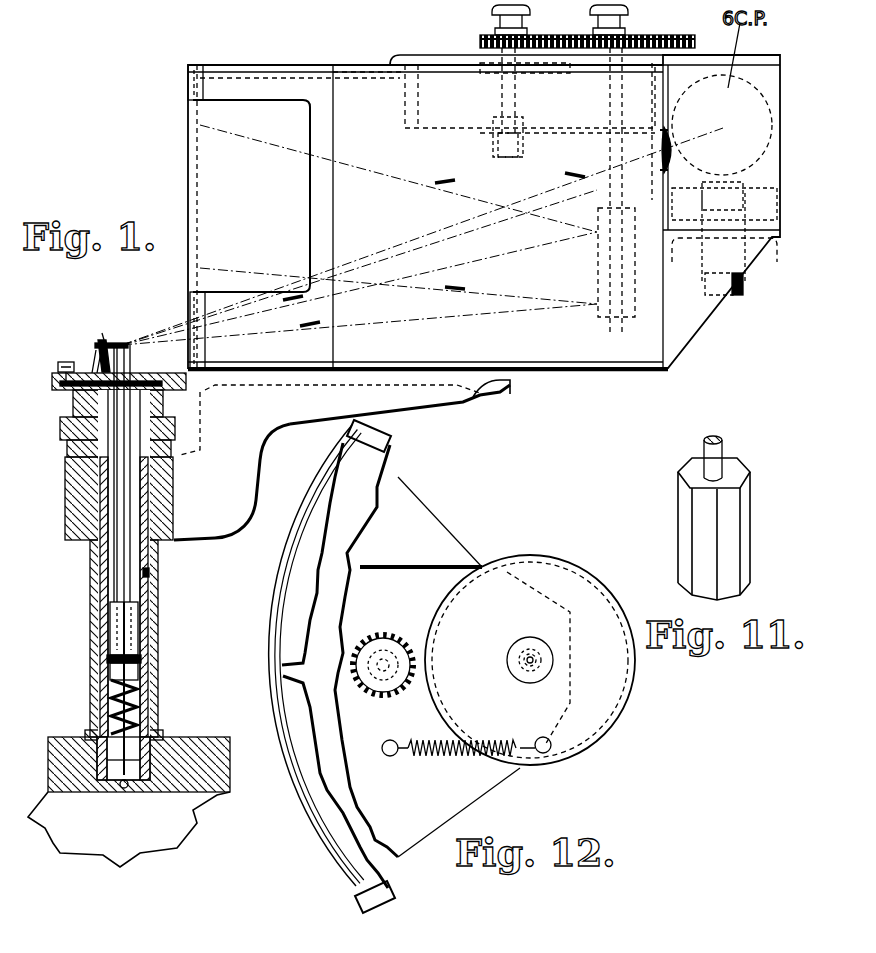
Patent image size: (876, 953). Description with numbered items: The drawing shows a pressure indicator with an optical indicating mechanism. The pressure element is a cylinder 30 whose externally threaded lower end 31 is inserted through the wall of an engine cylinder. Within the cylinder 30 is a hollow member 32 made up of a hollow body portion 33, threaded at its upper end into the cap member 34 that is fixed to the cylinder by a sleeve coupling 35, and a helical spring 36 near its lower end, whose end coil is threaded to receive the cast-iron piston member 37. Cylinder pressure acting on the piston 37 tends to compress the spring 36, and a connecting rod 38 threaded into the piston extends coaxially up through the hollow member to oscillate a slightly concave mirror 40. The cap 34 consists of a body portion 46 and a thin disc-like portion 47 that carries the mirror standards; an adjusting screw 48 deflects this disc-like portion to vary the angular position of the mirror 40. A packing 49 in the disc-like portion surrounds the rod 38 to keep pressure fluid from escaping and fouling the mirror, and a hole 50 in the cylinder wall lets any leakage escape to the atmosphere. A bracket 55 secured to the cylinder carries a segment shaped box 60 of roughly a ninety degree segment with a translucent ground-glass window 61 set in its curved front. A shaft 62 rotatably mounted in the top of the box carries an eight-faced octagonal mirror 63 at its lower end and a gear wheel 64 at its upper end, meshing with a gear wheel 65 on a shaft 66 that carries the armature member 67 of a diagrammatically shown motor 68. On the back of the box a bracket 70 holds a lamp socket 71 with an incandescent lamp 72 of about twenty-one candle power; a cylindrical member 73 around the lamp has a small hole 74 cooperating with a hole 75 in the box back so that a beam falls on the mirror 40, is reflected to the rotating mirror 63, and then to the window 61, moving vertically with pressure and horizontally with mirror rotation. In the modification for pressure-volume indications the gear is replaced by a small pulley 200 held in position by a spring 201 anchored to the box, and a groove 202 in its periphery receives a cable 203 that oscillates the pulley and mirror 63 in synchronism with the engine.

In FIG. 1, the segment shaped box 60 is at (570, 353).
In FIG. 1, the translucent window 61 is at (210, 192).
In FIG. 1, the shaft 62 is at (620, 327).
In FIG. 12, the shaft 62 is at (533, 667).
In FIG. 11, the shaft 62 is at (717, 463).
In FIG. 1, the rotatable mirror 63 is at (633, 303).
In FIG. 11, the rotatable mirror 63 is at (728, 535).
In FIG. 1, the gear wheel 64 is at (652, 38).
In FIG. 1, the gear wheel 65 is at (482, 35).
In FIG. 1, the shaft 66 is at (513, 101).
In FIG. 12, the shaft 66 is at (390, 657).
In FIG. 1, the armature member 67 is at (457, 72).
In FIG. 1, the motor 68 is at (580, 90).
In FIG. 1, the bracket 70 is at (750, 250).
In FIG. 1, the lamp socket 71 is at (743, 212).
In FIG. 1, the incandescent lamp 72 is at (738, 107).
In FIG. 1, the cylindrical member 73 is at (697, 75).
In FIG. 1, the hole 74 is at (673, 153).
In FIG. 1, the hole 75 is at (663, 143).
In FIG. 1, the cylinder 30 is at (92, 625).
In FIG. 1, the externally threaded lower end 31 is at (150, 755).
In FIG. 1, the hollow member 32 is at (128, 642).
In FIG. 1, the hollow body portion 33 is at (104, 556).
In FIG. 1, the cap member 34 is at (165, 383).
In FIG. 1, the sleeve coupling 35 is at (68, 442).
In FIG. 1, the helical spring 36 is at (128, 697).
In FIG. 1, the piston member 37 is at (160, 745).
In FIG. 1, the connecting rod 38 is at (125, 578).
In FIG. 1, the oscillatable mirror 40 is at (104, 340).
In FIG. 1, the body portion 46 is at (88, 402).
In FIG. 1, the disc-like portion 47 is at (92, 362).
In FIG. 1, the adjusting screw 48 is at (62, 364).
In FIG. 1, the packing 49 is at (60, 384).
In FIG. 1, the hole 50 is at (149, 573).
In FIG. 1, the bracket 55 is at (250, 497).
In FIG. 12, the pulley 200 is at (610, 677).
In FIG. 12, the spring 201 is at (467, 755).
In FIG. 12, the groove 202 is at (480, 580).
In FIG. 12, the cable 203 is at (422, 565).